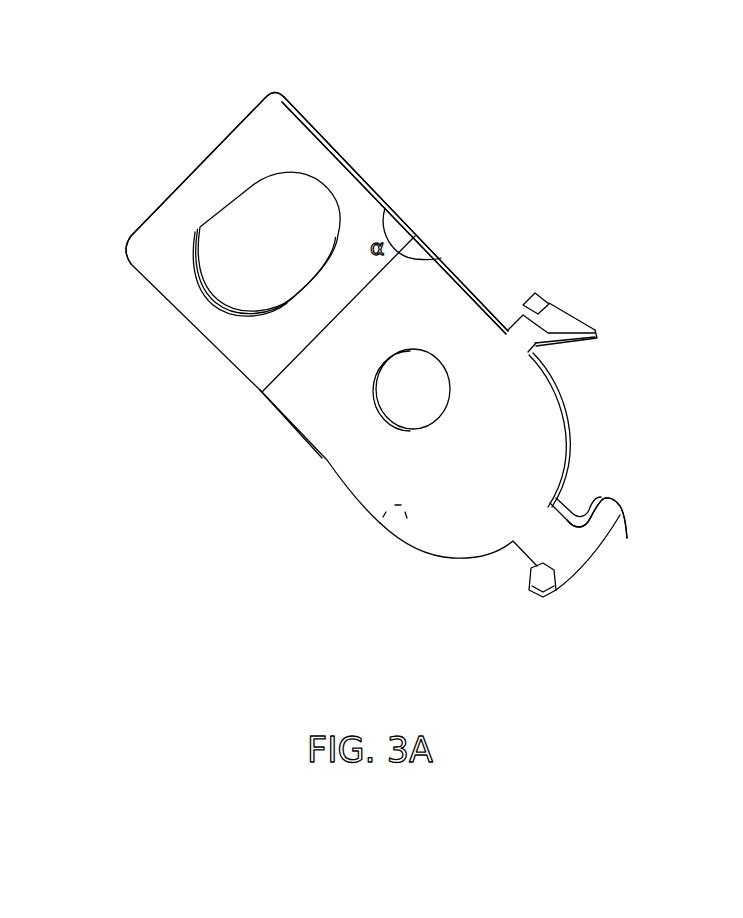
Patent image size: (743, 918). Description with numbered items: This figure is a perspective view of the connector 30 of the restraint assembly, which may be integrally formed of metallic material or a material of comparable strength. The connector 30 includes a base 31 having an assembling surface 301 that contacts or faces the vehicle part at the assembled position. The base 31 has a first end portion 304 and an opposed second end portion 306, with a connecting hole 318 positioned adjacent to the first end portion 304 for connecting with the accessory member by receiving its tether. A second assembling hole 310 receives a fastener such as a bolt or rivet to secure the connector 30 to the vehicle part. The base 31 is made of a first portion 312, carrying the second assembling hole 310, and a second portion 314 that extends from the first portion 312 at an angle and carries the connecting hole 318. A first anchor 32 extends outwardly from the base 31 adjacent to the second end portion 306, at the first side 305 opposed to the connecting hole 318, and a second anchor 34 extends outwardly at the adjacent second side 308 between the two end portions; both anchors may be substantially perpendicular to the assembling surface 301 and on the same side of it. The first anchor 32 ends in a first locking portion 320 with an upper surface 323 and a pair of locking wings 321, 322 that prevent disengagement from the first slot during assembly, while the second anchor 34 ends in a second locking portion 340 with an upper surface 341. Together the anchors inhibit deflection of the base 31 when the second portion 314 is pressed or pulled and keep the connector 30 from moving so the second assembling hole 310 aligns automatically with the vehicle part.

The connector 30 is at (487, 157).
The base 31 is at (276, 409).
The first anchor 32 is at (527, 558).
The second anchor 34 is at (590, 291).
The assembling surface 301 is at (378, 525).
The first end portion 304 is at (248, 143).
The first side 305 is at (572, 505).
The second end portion 306 is at (463, 535).
The second side 308 is at (442, 262).
The second assembling hole 310 is at (410, 402).
The first portion 312 is at (520, 436).
The second portion 314 is at (288, 158).
The connecting hole 318 is at (257, 247).
The first locking portion 320 is at (573, 558).
The locking wing 321 is at (550, 590).
The locking wing 322 is at (627, 538).
The upper surface 323 is at (587, 512).
The second locking portion 340 is at (558, 306).
The upper surface 341 is at (533, 294).